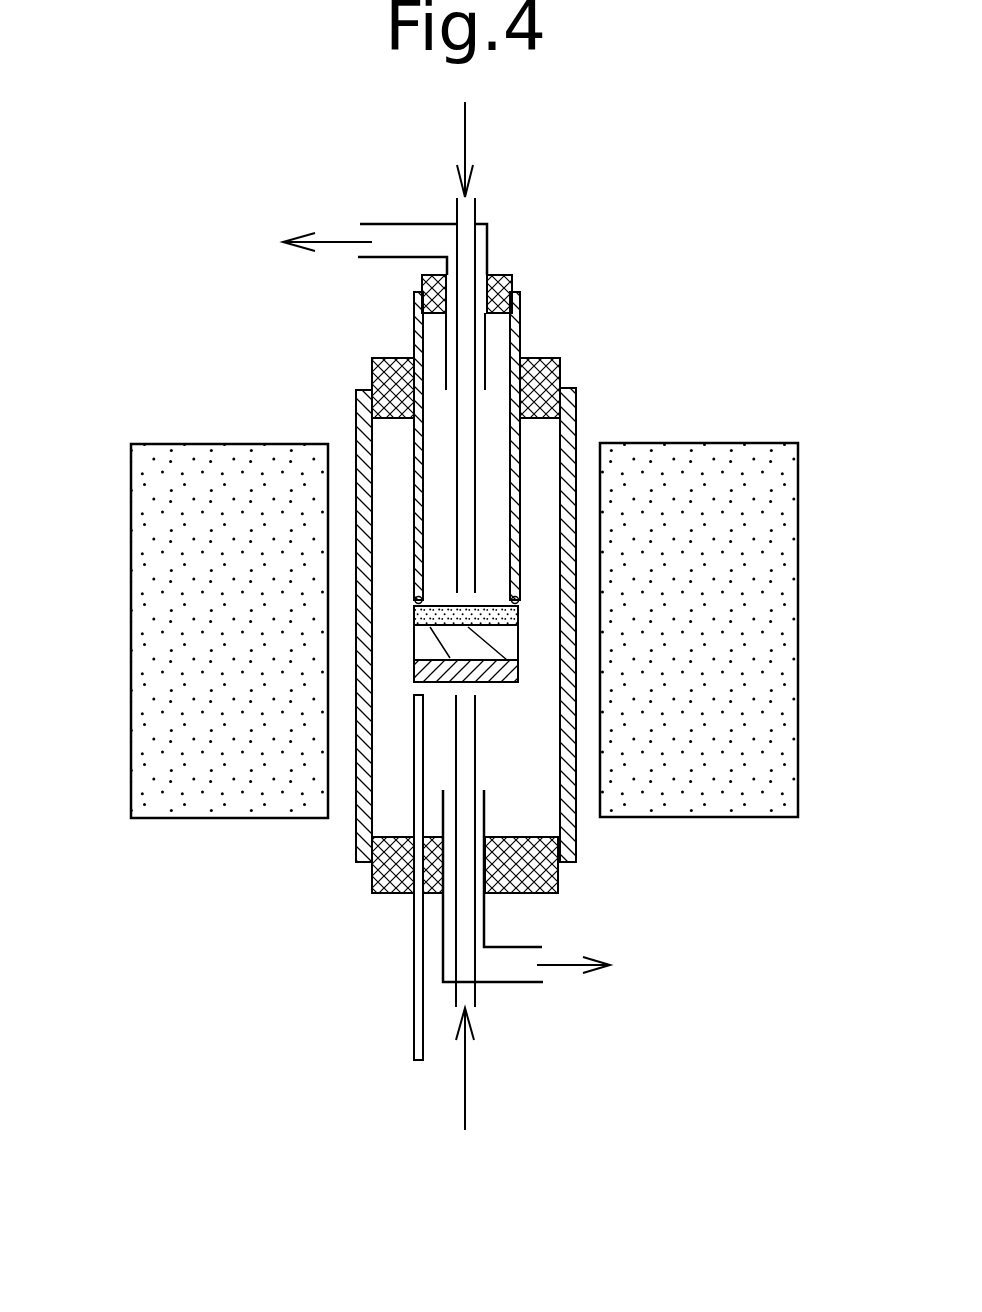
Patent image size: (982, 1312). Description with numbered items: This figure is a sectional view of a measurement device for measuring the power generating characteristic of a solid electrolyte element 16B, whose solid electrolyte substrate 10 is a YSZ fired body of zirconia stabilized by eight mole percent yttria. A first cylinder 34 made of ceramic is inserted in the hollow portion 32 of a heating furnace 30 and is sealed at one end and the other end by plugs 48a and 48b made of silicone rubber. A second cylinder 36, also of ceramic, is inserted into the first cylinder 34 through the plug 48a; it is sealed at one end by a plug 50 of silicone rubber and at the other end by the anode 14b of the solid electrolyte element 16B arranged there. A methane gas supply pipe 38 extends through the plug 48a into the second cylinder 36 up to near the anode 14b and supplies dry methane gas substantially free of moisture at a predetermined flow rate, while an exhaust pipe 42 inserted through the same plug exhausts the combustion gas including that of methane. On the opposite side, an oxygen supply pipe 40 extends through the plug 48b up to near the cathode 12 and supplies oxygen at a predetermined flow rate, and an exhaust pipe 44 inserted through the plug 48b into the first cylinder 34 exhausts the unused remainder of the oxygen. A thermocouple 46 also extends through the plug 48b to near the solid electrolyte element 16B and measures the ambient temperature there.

The solid electrolyte substrate 10 is at (507, 643).
The cathode 12 is at (507, 673).
The anode 14b is at (518, 616).
The solid electrolyte element 16B is at (403, 690).
The heating furnace 30 is at (131, 490).
The hollow portion 32 is at (356, 723).
The first cylinder 34 is at (577, 407).
The second cylinder 36 is at (520, 328).
The methane gas supply pipe 38 is at (467, 482).
The oxygen supply pipe 40 is at (464, 757).
The exhaust pipe 42 is at (388, 222).
The exhaust pipe 44 is at (518, 985).
The thermocouple 46 is at (413, 997).
The plug 48a is at (393, 358).
The plug 48b is at (370, 875).
The plug 50 is at (500, 275).